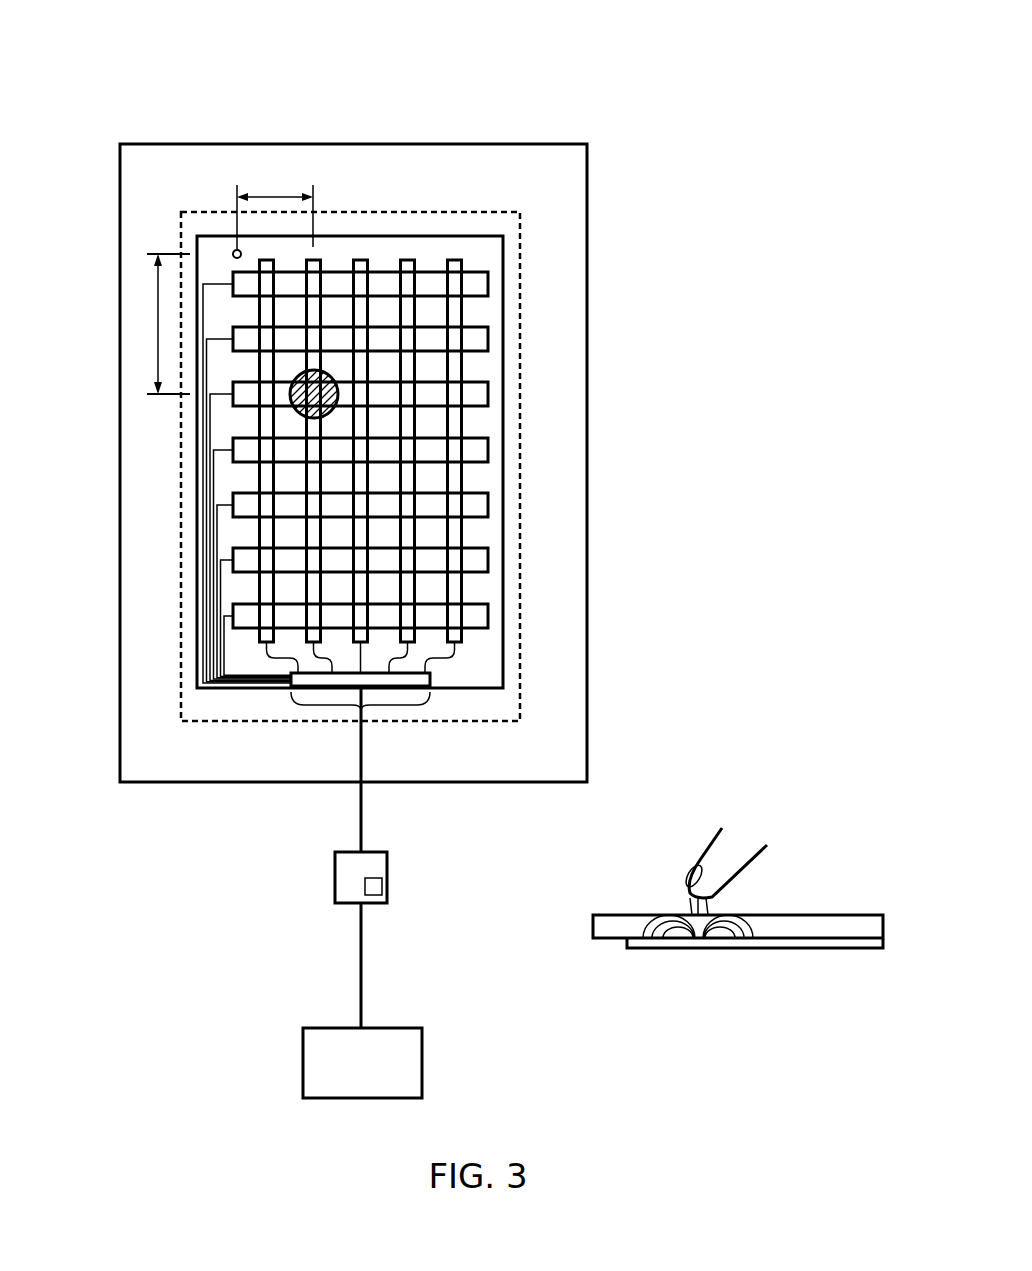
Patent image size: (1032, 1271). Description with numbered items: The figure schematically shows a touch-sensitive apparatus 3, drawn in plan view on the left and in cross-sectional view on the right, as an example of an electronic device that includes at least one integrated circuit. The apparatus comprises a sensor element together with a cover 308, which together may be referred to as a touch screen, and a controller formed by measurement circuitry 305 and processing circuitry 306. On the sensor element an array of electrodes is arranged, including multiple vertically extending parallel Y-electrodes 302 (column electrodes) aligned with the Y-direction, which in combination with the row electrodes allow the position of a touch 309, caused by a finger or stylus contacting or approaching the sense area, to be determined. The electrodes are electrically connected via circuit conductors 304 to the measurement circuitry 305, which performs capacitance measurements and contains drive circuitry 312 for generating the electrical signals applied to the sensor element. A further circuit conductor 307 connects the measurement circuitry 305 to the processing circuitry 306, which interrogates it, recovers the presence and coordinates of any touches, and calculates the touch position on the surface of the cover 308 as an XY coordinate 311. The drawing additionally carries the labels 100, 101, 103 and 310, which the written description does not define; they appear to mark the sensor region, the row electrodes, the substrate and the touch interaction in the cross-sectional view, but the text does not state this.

The touch-sensitive apparatus 3 is at (857, 133).
The touch sensor 100 is at (520, 420).
The row electrodes 101 is at (488, 284).
The substrate 103 is at (503, 622).
The Y-electrodes 302 is at (360, 258).
The circuit conductors 304 is at (210, 667).
The measurement circuitry 305 is at (335, 886).
The processing circuitry 306 is at (303, 1064).
The circuit conductor 307 is at (362, 981).
The cover 308 is at (540, 143).
The touch 309 is at (305, 397).
The electric field lines 310 is at (656, 915).
The XY coordinate 311 is at (263, 180).
The drive circuitry 312 is at (382, 887).